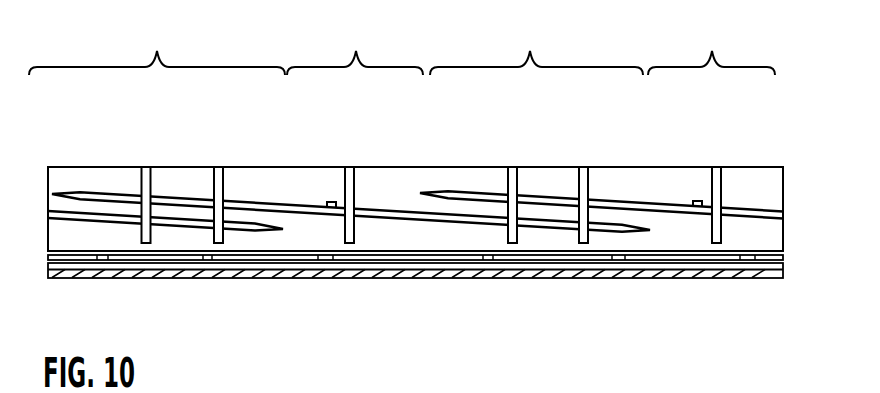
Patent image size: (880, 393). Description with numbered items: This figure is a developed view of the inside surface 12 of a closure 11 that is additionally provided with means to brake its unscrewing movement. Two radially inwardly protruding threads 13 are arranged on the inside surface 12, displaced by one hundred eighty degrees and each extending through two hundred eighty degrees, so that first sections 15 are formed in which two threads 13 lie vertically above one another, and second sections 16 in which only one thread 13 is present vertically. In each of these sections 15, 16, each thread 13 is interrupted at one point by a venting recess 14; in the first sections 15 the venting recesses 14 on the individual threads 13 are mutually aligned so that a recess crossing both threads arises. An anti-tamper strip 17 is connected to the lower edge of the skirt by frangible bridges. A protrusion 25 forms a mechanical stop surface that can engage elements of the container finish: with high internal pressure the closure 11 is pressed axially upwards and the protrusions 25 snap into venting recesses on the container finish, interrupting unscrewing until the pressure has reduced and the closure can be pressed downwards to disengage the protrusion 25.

The closure 11 is at (414, 152).
The inside surface 12 is at (457, 235).
The threads 13 is at (190, 226).
The venting recess 14 is at (147, 186).
The first sections 15 is at (336, 43).
The second sections 16 is at (531, 43).
The anti-tamper strip 17 is at (708, 276).
The protrusion 25 is at (330, 201).